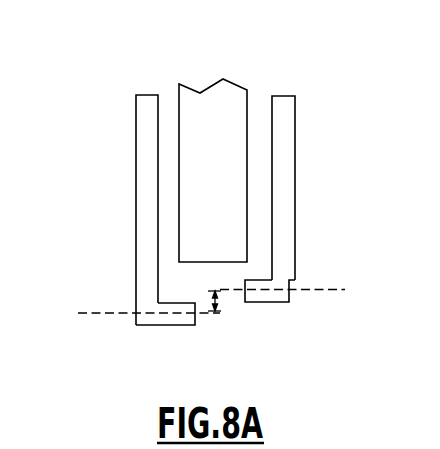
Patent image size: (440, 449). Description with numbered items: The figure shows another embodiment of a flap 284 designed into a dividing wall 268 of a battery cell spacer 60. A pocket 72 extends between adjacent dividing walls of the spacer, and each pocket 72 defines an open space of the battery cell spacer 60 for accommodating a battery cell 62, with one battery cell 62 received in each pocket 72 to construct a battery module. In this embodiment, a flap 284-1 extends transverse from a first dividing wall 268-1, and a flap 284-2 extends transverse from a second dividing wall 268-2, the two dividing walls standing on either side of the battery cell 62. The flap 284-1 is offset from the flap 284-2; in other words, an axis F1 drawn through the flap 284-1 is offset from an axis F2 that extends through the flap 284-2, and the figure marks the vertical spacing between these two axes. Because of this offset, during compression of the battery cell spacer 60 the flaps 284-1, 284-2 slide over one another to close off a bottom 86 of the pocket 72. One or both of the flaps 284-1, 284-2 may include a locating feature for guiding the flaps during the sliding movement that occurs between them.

The battery cell spacer 60 is at (238, 132).
The battery cell 62 is at (227, 172).
The pocket 72 is at (259, 110).
The dividing wall 268 is at (218, 178).
The first dividing wall 268-1 is at (143, 185).
The second dividing wall 268-2 is at (285, 174).
The flap 284 is at (204, 345).
The flap 284-1 is at (145, 320).
The flap 284-2 is at (167, 338).
The bottom of pocket 86 is at (256, 271).
The axis through flap 284-1 F1 is at (84, 318).
The axis through flap 284-2 F2 is at (337, 295).